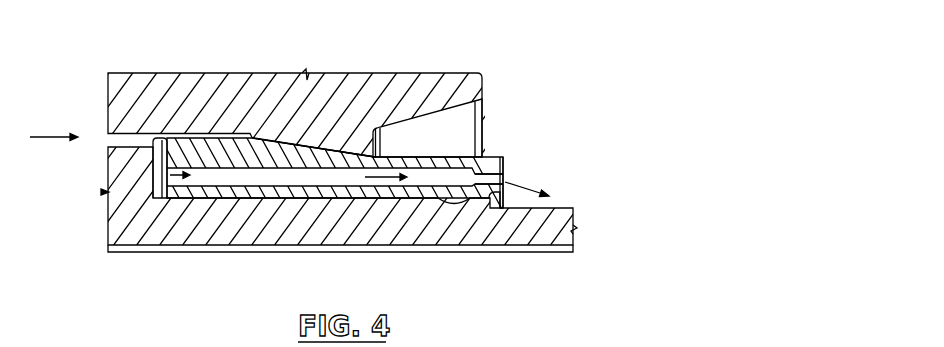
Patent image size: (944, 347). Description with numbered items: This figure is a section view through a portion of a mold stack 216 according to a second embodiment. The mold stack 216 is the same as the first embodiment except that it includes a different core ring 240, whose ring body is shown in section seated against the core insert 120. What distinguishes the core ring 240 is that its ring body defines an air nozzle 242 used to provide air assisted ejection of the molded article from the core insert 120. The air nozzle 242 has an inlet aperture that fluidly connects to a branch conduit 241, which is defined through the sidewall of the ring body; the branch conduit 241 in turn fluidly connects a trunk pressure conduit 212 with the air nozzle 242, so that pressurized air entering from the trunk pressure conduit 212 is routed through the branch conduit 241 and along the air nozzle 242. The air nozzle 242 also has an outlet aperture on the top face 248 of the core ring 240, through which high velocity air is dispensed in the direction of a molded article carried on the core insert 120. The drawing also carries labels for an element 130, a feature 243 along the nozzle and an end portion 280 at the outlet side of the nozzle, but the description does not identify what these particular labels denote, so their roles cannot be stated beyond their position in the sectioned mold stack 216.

The upper mold block 130 is at (360, 70).
The core insert 120 is at (547, 255).
The air nozzle 242 is at (328, 180).
The tapered surface of insert 243 is at (268, 143).
The branch conduit 241 is at (150, 193).
The trunk pressure conduit 212 is at (108, 143).
The end face 280 is at (503, 157).
The top face 248 is at (503, 169).
The core ring 240 is at (546, 178).
The mold stack 216 is at (607, 93).